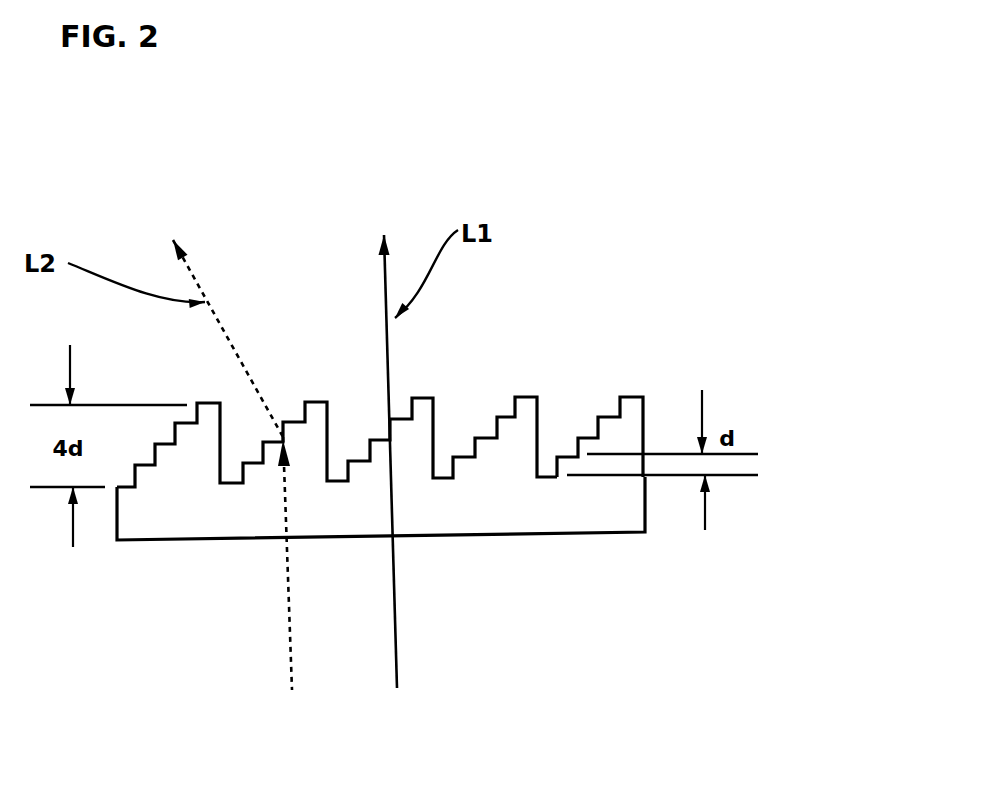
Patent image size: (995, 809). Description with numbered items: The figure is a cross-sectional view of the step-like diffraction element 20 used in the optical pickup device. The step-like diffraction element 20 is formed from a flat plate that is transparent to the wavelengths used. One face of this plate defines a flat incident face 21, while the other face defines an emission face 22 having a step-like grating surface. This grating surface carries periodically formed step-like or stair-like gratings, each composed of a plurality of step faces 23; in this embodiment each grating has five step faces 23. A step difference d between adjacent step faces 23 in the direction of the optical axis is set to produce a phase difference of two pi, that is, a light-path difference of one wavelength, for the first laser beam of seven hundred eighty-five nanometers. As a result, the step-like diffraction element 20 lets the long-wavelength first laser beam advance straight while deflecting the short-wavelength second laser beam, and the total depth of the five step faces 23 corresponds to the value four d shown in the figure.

The step-like diffraction element 20 is at (448, 382).
The flat incident face 21 is at (463, 533).
The emission face 22 is at (523, 393).
The step faces 23 is at (555, 457).